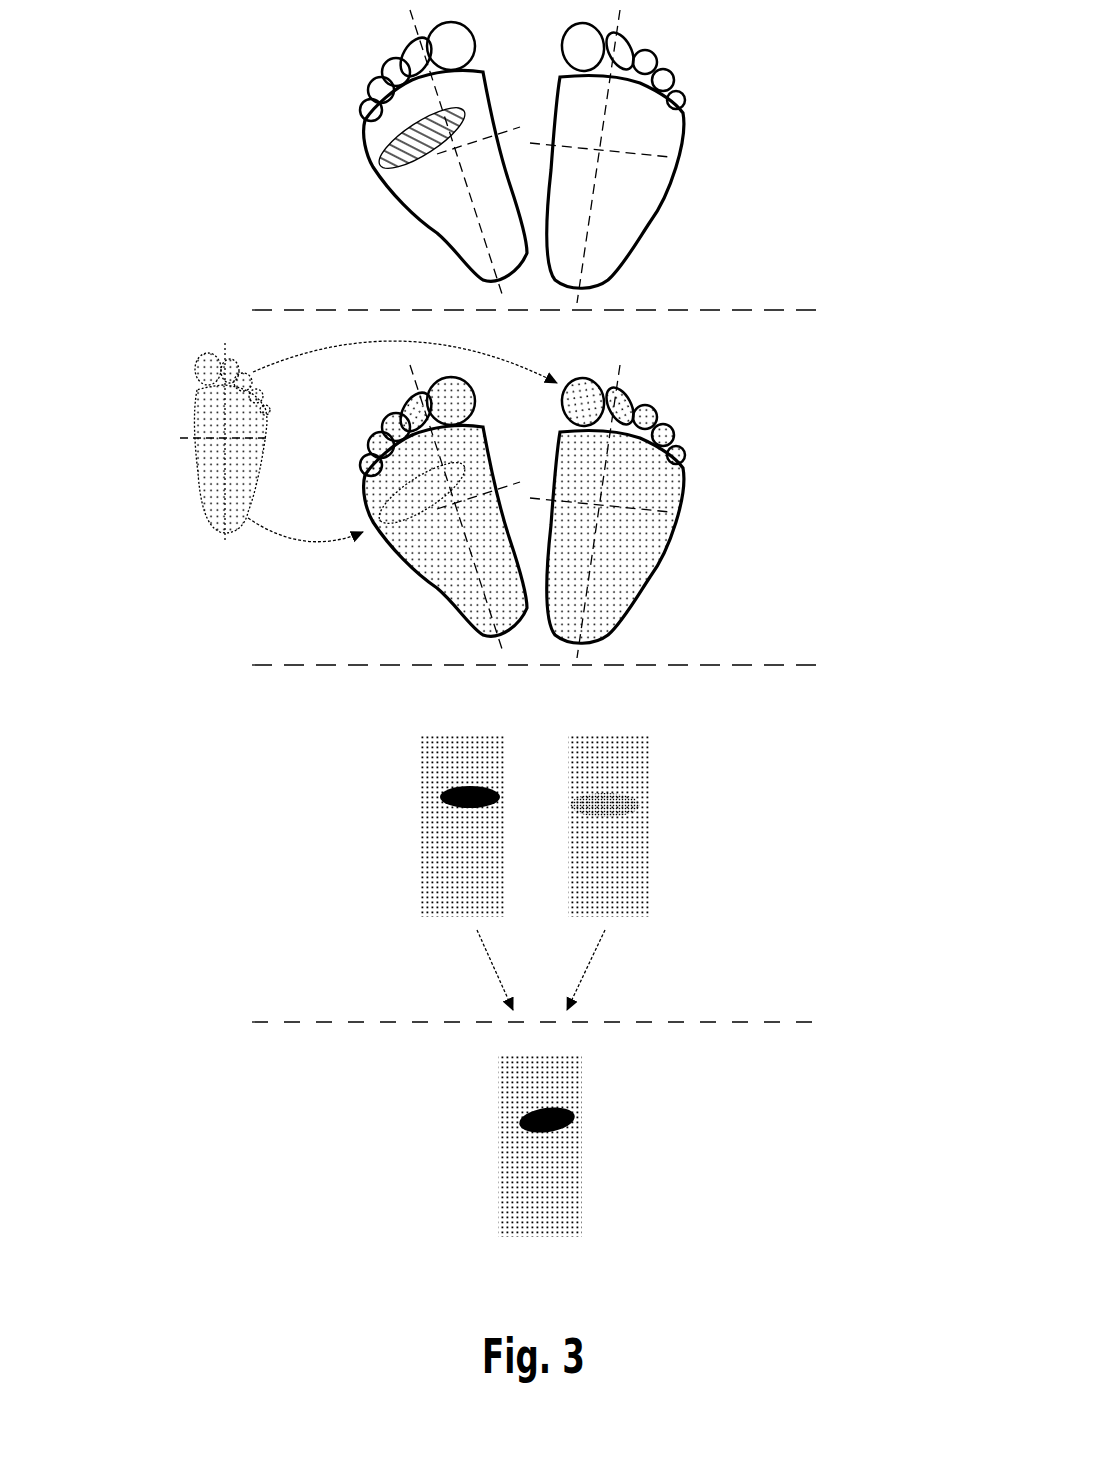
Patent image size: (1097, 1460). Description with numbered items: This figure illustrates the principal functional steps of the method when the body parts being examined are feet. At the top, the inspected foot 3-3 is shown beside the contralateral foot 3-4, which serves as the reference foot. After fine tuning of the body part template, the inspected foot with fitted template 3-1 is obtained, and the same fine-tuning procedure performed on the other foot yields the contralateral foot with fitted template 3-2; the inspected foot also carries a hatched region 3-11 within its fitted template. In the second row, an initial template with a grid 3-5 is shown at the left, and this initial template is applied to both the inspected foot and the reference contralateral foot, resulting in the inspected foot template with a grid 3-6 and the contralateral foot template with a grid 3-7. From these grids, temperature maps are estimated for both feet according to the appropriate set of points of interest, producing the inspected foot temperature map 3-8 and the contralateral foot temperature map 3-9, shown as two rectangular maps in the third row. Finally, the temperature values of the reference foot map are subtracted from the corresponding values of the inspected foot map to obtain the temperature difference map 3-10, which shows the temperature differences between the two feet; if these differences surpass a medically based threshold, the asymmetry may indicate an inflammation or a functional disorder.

The inspected foot with fitted template 3-1 is at (384, 60).
The contralateral foot with fitted template 3-2 is at (658, 68).
The inspected foot 3-3 is at (437, 210).
The contralateral foot 3-4 is at (620, 213).
The initial template with a grid 3-5 is at (232, 527).
The inspected foot template with a grid 3-6 is at (440, 597).
The contralateral foot template with a grid 3-7 is at (620, 590).
The inspected foot temperature map 3-8 is at (423, 890).
The contralateral foot temperature map 3-9 is at (650, 888).
The temperature difference map 3-10 is at (498, 1193).
The abnormal pressure region 3-11 is at (378, 160).